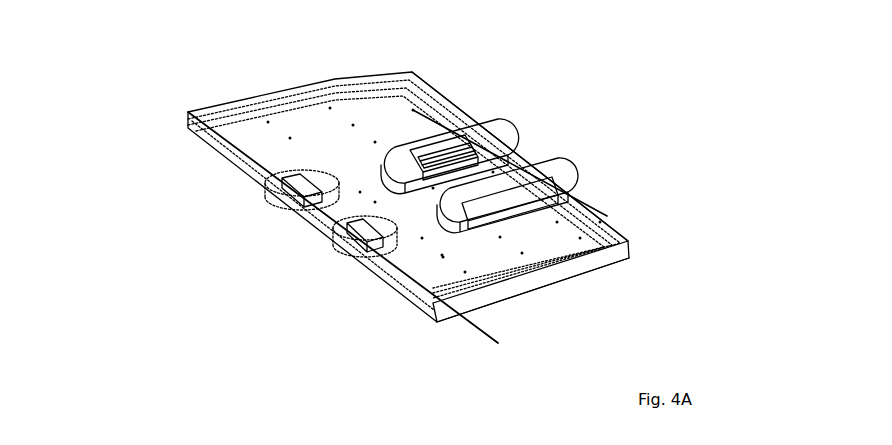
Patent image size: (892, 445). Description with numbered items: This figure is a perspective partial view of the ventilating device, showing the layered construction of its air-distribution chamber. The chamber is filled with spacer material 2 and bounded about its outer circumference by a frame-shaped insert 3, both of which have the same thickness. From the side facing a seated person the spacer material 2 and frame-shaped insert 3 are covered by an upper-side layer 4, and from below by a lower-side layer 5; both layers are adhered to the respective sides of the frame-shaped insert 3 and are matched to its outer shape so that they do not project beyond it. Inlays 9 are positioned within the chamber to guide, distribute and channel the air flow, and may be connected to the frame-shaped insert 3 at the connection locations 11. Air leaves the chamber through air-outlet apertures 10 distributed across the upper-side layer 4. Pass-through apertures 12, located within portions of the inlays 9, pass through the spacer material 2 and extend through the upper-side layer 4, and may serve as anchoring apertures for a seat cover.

The spacer material 2 is at (333, 283).
The frame-shaped insert 3 is at (600, 223).
The upper-side layer 4 is at (215, 140).
The lower-side layer 5 is at (562, 274).
The inlays 9 is at (408, 168).
The air-outlet apertures 10 is at (413, 110).
The connection locations 11 is at (500, 127).
The pass-through apertures 12 is at (333, 243).